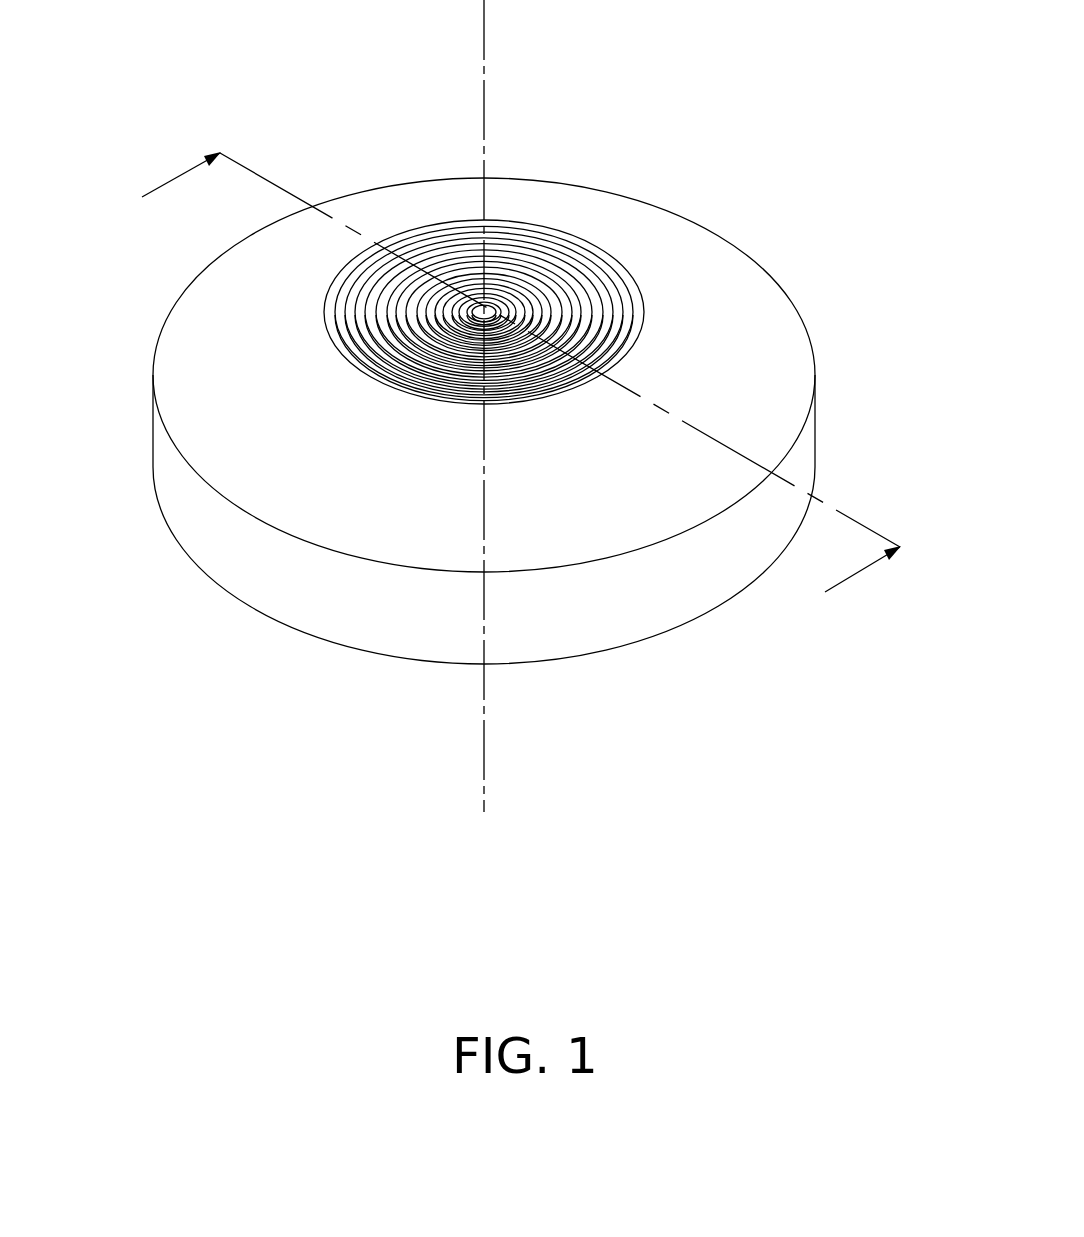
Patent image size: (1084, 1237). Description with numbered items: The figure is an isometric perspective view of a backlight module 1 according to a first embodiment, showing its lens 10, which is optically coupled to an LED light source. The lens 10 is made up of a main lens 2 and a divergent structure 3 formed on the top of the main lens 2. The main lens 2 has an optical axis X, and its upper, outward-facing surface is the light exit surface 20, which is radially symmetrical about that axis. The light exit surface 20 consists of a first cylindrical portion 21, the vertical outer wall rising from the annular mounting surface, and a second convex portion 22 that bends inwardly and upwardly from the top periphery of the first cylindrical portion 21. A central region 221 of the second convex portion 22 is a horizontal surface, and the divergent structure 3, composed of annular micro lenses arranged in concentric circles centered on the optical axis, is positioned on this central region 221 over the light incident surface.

The backlight module 1 is at (380, 126).
The lens 10 is at (717, 172).
The main lens 2 is at (588, 188).
The divergent structure 3 is at (597, 282).
The light exit surface 20 is at (702, 700).
The first cylindrical portion 21 is at (577, 623).
The second convex portion 22 is at (642, 512).
The central region 221 is at (648, 297).